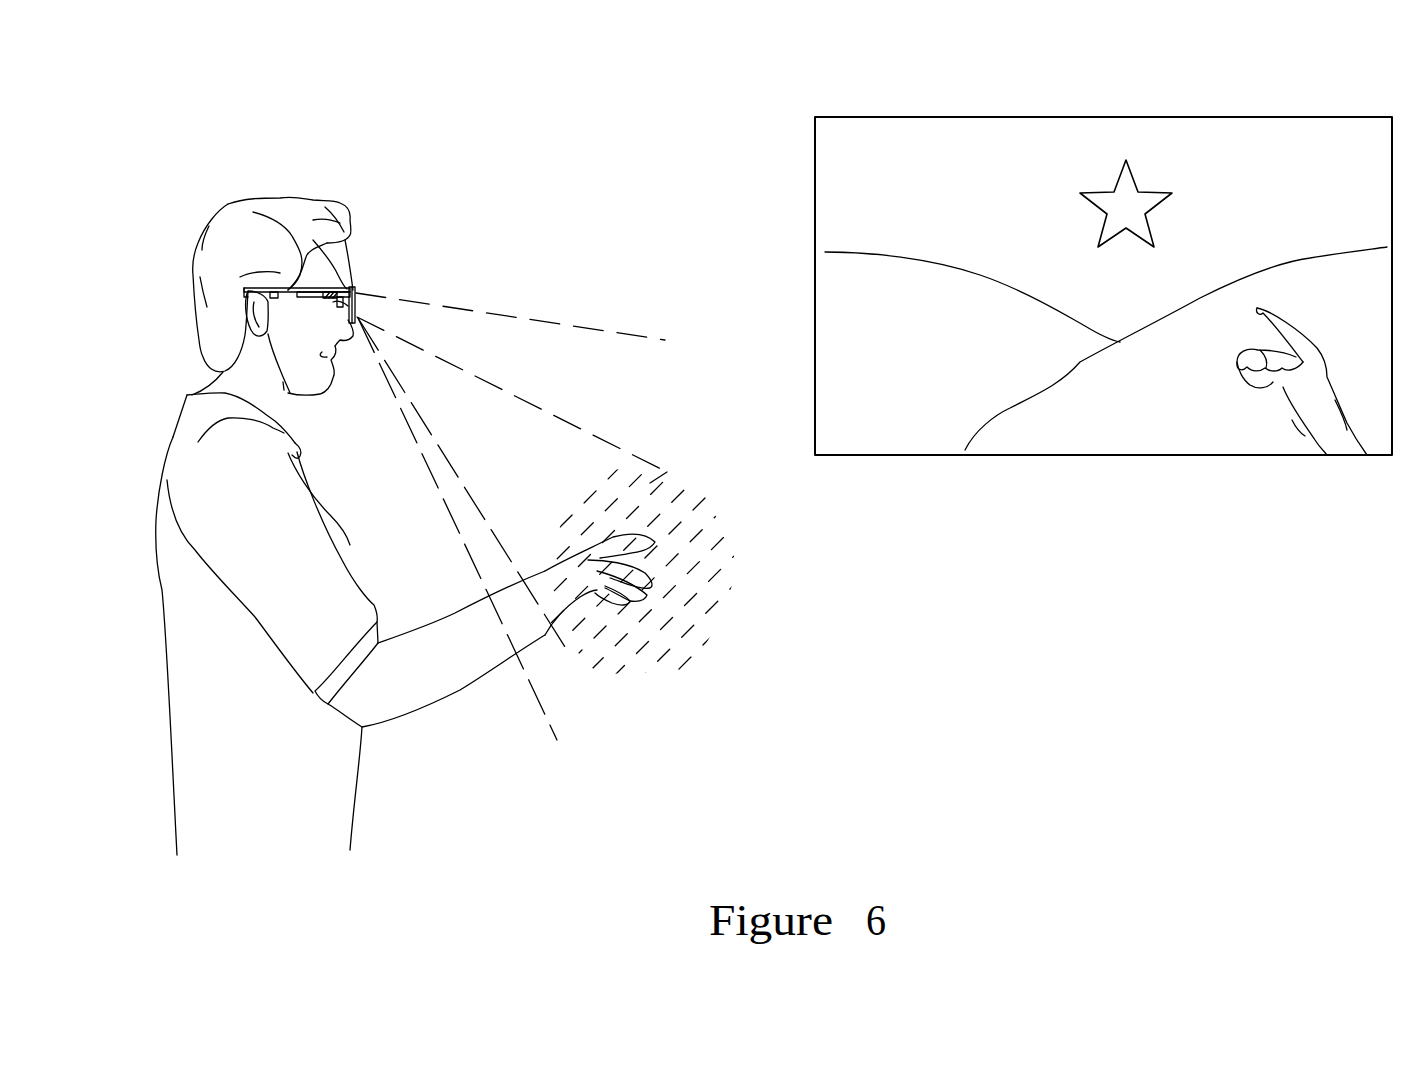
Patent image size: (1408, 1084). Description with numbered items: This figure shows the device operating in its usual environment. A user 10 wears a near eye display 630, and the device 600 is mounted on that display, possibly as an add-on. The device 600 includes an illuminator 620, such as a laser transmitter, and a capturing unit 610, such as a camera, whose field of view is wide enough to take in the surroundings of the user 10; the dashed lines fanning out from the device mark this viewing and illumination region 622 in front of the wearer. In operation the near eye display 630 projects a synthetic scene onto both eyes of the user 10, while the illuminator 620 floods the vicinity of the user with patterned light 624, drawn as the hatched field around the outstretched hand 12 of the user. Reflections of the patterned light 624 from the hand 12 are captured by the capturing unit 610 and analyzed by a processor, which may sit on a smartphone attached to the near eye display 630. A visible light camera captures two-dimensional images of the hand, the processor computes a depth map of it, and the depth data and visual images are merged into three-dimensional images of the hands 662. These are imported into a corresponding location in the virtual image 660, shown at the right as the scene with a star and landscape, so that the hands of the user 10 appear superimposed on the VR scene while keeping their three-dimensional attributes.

The user 10 is at (160, 383).
The hand of user 12 is at (580, 590).
The device 600 is at (356, 287).
The capturing unit 610 is at (358, 292).
The illuminator 620 is at (360, 316).
The gesture detection region 622 is at (497, 424).
The patterned light 624 is at (648, 660).
The near eye display 630 is at (290, 222).
The virtual image 660 is at (915, 86).
The 3D images of the hands 662 is at (1200, 405).